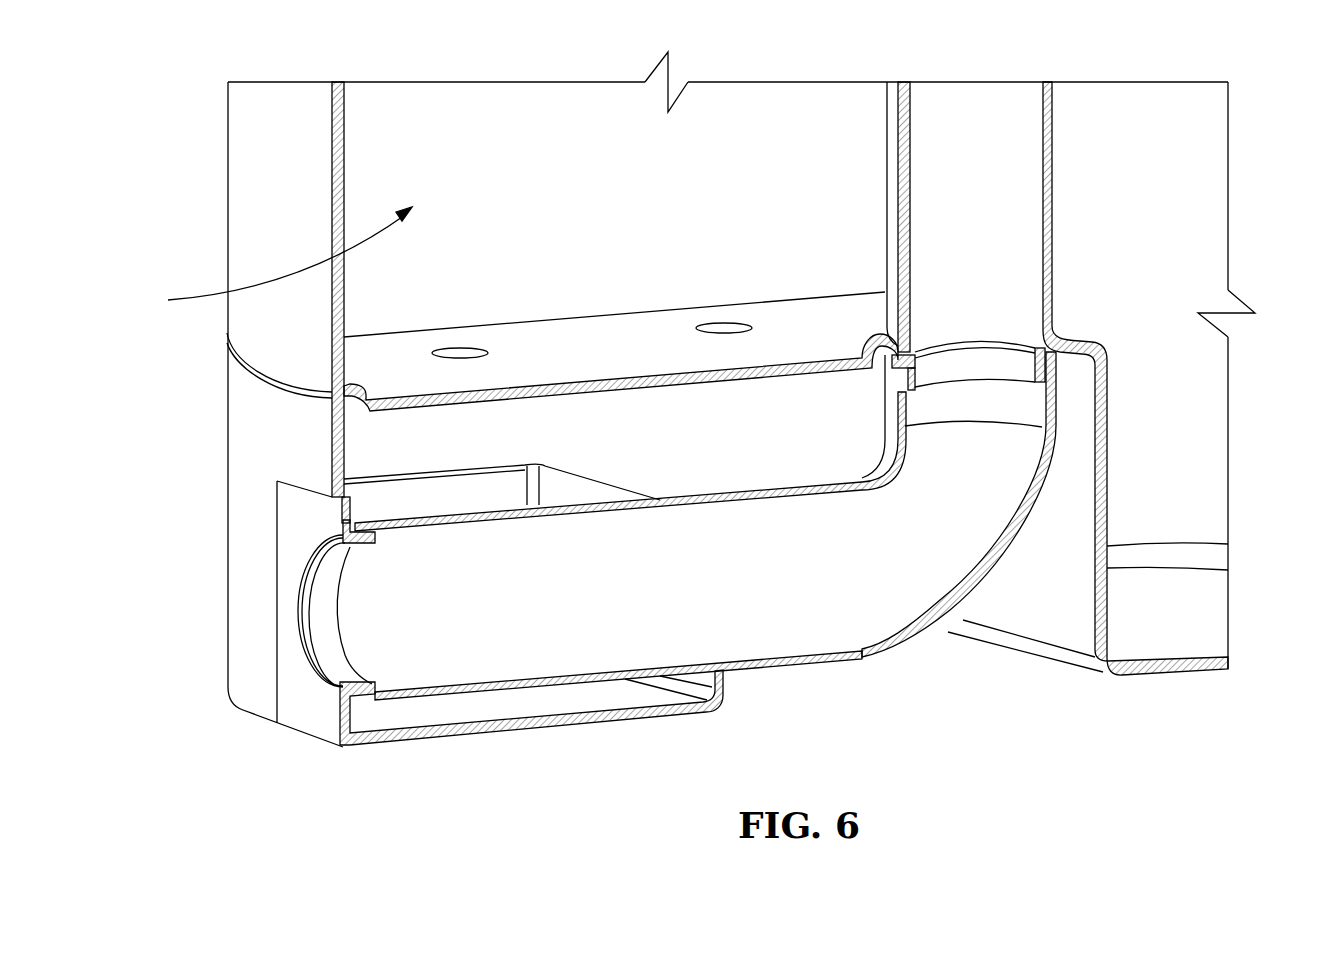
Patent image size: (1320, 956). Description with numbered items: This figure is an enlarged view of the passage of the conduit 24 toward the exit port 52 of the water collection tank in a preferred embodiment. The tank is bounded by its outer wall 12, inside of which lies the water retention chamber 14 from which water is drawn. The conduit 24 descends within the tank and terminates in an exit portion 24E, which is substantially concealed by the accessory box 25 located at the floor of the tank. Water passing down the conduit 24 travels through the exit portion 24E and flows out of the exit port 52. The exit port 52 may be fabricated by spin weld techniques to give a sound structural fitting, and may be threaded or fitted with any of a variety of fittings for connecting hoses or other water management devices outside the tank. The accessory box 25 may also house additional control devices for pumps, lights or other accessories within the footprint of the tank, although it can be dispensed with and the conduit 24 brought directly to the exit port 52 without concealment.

The outer wall 12 is at (247, 197).
The water retention chamber 14 is at (277, 262).
The conduit 24 is at (1053, 203).
The exit portion 24E is at (748, 605).
The accessory box 25 is at (593, 350).
The exit port 52 is at (340, 640).